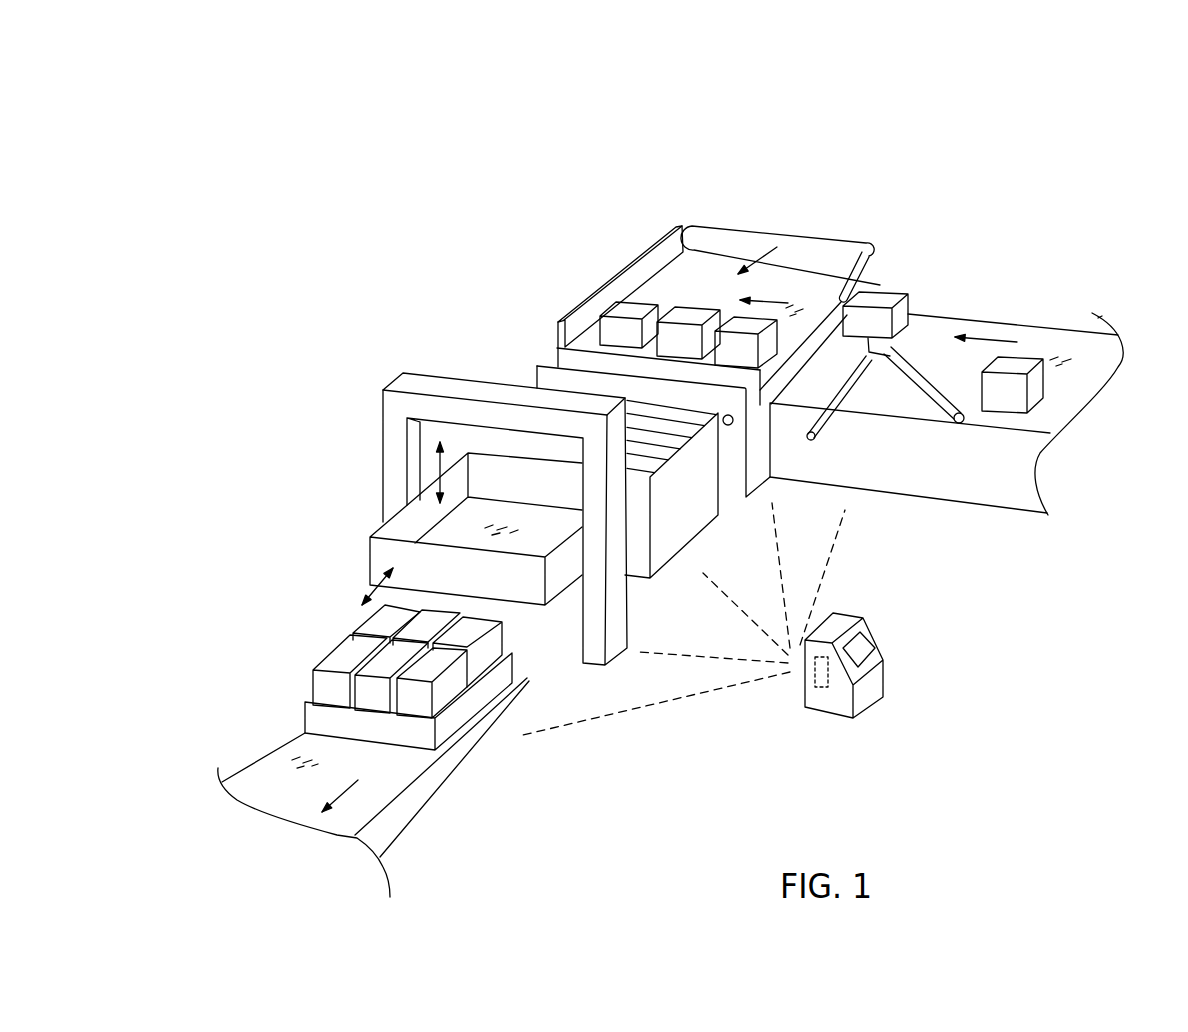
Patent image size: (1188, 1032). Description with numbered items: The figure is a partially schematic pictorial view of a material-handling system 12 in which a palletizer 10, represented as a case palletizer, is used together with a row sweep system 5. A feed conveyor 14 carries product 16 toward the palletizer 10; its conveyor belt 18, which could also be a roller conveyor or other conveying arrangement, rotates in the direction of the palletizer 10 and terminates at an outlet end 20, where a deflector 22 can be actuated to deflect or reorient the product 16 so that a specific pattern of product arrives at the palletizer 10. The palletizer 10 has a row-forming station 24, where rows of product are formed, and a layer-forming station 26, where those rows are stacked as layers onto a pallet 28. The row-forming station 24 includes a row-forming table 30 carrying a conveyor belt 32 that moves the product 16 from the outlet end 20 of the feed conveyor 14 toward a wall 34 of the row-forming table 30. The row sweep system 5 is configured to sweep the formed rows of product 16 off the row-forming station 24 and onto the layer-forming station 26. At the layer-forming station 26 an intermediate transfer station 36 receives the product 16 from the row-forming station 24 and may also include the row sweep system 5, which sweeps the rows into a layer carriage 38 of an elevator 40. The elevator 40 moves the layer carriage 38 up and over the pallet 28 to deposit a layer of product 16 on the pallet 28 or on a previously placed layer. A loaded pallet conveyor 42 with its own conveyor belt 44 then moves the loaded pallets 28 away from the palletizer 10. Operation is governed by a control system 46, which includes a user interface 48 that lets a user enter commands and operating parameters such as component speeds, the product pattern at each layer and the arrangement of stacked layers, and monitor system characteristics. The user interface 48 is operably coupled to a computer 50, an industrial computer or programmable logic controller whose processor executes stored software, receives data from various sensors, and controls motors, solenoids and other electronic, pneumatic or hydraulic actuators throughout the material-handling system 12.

The palletizer 10 is at (447, 222).
The material-handling system 12 is at (1050, 103).
The feed conveyor 14 is at (1065, 290).
The product 16 is at (348, 643).
The conveyor belt 18 is at (1088, 362).
The outlet end 20 is at (832, 438).
The deflector 22 is at (905, 383).
The row-forming station 24 is at (563, 247).
The layer-forming station 26 is at (352, 372).
The pallet 28 is at (305, 718).
The row-forming table 30 is at (540, 357).
The conveyor belt 32 is at (808, 312).
The wall 34 is at (646, 250).
The intermediate transfer station 36 is at (703, 515).
The layer carriage 38 is at (370, 533).
The elevator 40 is at (426, 368).
The loaded pallet conveyor 42 is at (420, 828).
The conveyor belt 44 is at (223, 792).
The control system 46 is at (897, 648).
The user interface 48 is at (860, 642).
The computer 50 is at (815, 684).
The row sweep system 5 is at (866, 236).